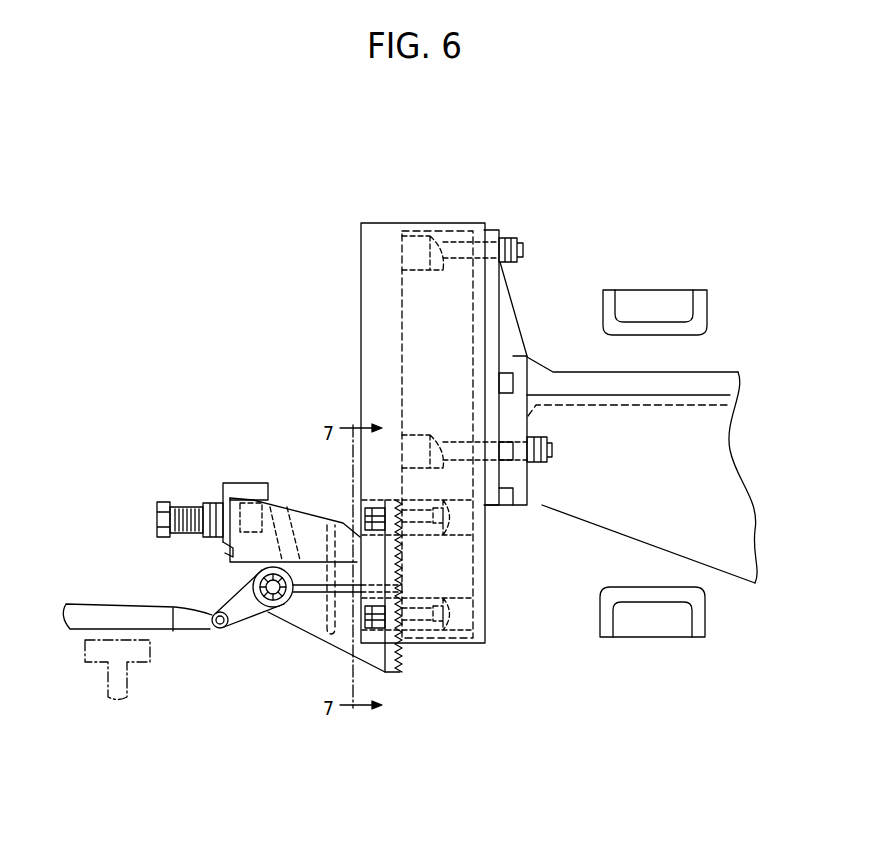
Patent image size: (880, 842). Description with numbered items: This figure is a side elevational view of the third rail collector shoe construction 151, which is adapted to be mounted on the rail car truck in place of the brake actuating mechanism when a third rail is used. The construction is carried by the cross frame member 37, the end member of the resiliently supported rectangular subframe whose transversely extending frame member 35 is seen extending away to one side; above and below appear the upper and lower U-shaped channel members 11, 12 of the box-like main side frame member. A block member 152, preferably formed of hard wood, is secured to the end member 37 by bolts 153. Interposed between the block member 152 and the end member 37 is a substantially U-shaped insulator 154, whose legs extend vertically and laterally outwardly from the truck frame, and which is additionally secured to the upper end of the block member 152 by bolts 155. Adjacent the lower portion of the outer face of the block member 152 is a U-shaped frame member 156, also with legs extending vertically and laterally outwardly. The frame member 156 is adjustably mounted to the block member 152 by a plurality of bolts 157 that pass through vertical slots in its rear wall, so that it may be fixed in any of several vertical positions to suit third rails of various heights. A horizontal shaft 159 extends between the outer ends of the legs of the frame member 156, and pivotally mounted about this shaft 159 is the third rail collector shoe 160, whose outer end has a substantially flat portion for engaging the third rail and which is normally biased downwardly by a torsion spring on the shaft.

The upper U-shaped channel member 11 is at (700, 305).
The lower U-shaped channel member 12 is at (700, 620).
The transversely extending frame member 35 is at (718, 413).
The cross frame member 37 is at (527, 357).
The third rail collector shoe construction 151 is at (251, 631).
The block member 152 is at (407, 337).
The bolts 153 is at (458, 440).
The U-shaped insulator 154 is at (368, 242).
The bolts 155 is at (463, 242).
The U-shaped frame member 156 is at (342, 641).
The bolts 157 is at (410, 613).
The horizontal shaft 159 is at (252, 581).
The third rail collector shoe 160 is at (185, 628).